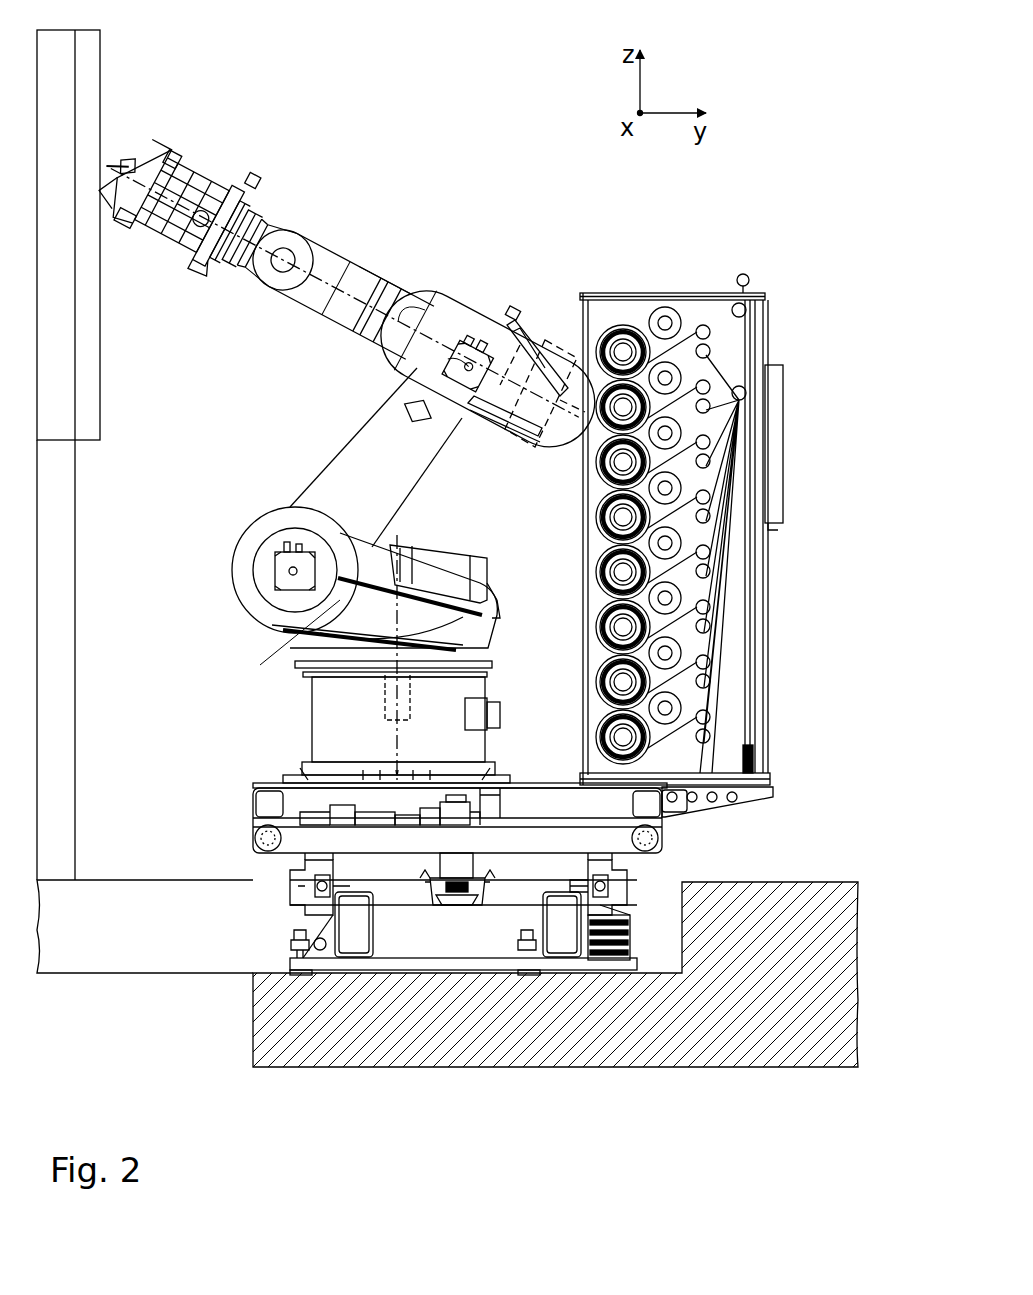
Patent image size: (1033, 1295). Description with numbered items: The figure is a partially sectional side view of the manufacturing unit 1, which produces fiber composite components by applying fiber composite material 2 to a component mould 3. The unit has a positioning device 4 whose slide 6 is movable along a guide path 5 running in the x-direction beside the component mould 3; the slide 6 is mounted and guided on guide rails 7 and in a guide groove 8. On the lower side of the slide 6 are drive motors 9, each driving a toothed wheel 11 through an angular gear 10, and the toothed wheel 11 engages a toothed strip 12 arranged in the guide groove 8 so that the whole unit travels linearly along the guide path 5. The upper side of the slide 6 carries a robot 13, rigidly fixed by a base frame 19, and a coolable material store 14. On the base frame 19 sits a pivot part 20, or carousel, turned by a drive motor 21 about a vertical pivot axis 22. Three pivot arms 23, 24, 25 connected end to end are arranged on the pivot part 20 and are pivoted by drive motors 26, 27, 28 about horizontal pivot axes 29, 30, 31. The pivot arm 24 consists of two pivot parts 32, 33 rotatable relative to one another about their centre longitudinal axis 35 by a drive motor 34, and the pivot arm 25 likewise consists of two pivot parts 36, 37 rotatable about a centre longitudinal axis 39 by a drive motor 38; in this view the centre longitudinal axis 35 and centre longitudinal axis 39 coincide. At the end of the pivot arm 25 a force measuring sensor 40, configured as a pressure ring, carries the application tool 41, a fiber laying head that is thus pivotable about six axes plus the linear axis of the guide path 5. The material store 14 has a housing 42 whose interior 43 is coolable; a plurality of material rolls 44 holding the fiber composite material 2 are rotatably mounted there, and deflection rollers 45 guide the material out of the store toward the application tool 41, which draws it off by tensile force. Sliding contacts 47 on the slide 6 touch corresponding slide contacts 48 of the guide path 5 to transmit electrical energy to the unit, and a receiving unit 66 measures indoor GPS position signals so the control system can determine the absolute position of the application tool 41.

The manufacturing unit 1 is at (526, 118).
The fiber composite material 2 is at (742, 276).
The component mould 3 is at (100, 56).
The positioning device 4 is at (222, 607).
The guide path 5 is at (290, 892).
The slide 6 is at (268, 798).
The guide rails 7 is at (313, 885).
The guide groove 8 is at (457, 840).
The drive motors 9 is at (330, 820).
The angular gear 10 is at (448, 832).
The toothed wheel 11 is at (442, 893).
The toothed strip 12 is at (470, 890).
The robot 13 is at (401, 280).
The material store 14 is at (642, 292).
The base frame 19 is at (320, 732).
The pivot part 20 is at (292, 645).
The drive motor 21 is at (385, 706).
The vertical pivot axis 22 is at (395, 692).
The pivot arm 23 is at (330, 478).
The pivot arm 24 is at (369, 324).
The pivot arm 25 is at (268, 208).
The drive motor 26 is at (290, 556).
The drive motor 27 is at (467, 352).
The drive motor 28 is at (553, 343).
The pivot axis 29 is at (289, 571).
The pivot axis 30 is at (420, 378).
The pivot axis 31 is at (281, 264).
The pivot part 32 is at (410, 312).
The pivot part 33 is at (330, 304).
The drive motor 34 is at (520, 343).
The centre longitudinal axis 35 is at (350, 292).
The pivot part 36 is at (257, 264).
The pivot part 37 is at (228, 250).
The drive motor 38 is at (505, 436).
The centre longitudinal axis 39 is at (173, 158).
The force measuring sensor 40 is at (256, 180).
The application tool 41 is at (172, 250).
The housing 42 is at (770, 697).
The interior 43 is at (745, 645).
The material rolls 44 is at (628, 742).
The deflection rollers 45 is at (749, 280).
The sliding contacts 47 is at (612, 960).
The slide contacts 48 is at (596, 960).
The receiving unit 66 is at (117, 182).